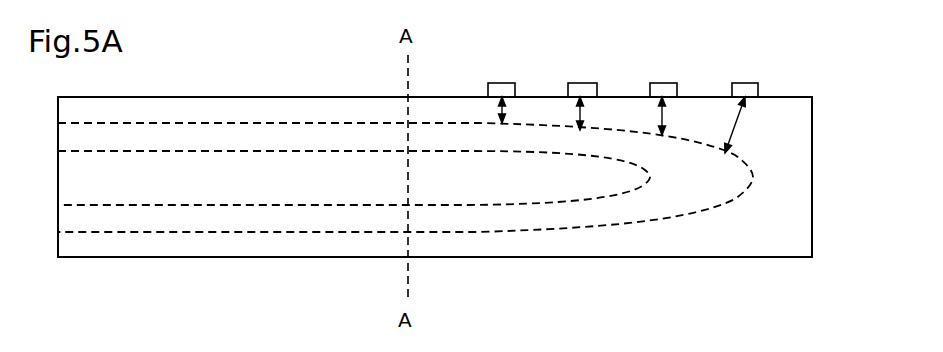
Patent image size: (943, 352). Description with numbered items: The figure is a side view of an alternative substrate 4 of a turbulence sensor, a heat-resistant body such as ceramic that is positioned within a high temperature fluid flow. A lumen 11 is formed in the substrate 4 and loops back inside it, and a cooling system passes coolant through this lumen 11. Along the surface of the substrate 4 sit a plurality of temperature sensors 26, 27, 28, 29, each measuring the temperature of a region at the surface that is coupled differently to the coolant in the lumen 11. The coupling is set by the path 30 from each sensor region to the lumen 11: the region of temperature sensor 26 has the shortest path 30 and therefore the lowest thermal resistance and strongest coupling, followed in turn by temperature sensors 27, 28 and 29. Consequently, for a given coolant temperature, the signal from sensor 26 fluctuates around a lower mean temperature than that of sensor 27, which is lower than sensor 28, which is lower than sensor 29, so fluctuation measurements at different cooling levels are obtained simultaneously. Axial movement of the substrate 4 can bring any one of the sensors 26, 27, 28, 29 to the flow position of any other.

The substrate 4 is at (313, 245).
The lumen 11 is at (340, 133).
The temperature sensor 26 is at (502, 87).
The temperature sensor 27 is at (583, 87).
The temperature sensor 28 is at (663, 87).
The temperature sensor 29 is at (745, 87).
The path 30 is at (632, 125).